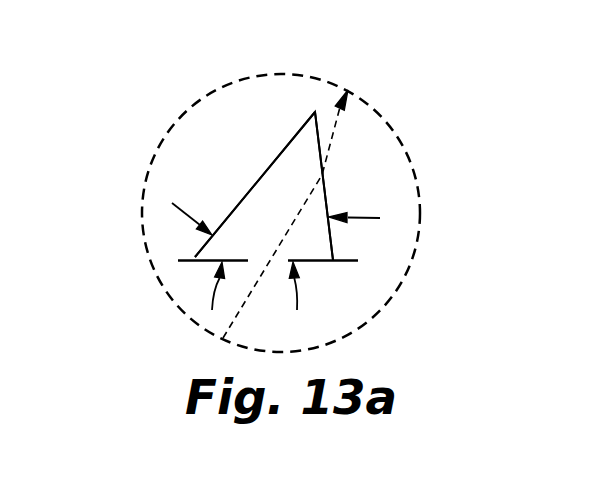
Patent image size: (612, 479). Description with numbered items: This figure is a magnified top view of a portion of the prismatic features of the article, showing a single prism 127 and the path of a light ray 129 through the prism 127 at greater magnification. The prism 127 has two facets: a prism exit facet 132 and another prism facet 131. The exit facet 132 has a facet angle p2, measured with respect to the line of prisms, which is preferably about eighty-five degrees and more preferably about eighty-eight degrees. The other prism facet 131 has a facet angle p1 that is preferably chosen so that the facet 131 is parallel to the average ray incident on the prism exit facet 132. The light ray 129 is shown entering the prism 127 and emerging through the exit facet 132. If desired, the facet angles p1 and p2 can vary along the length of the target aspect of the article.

The prism 127 is at (304, 125).
The prism facet 131 is at (275, 160).
The prism exit facet 132 is at (332, 243).
The light ray 129 is at (332, 138).
The facet angle p1 is at (185, 208).
The facet angle p2 is at (368, 217).